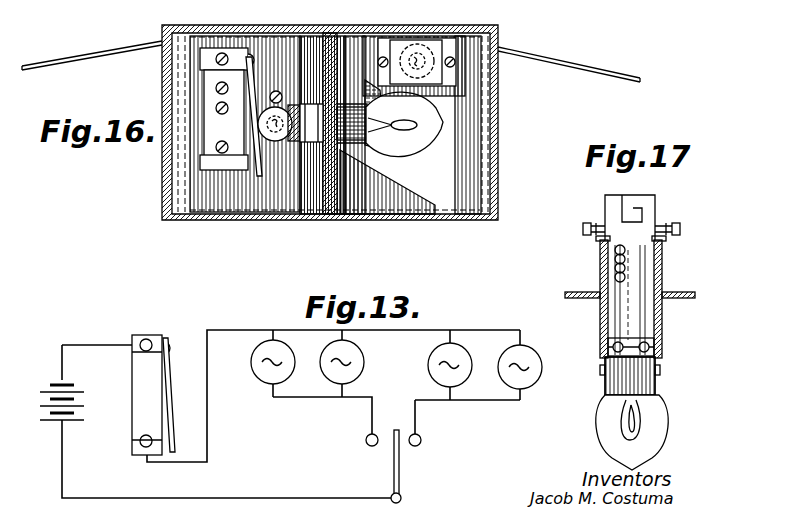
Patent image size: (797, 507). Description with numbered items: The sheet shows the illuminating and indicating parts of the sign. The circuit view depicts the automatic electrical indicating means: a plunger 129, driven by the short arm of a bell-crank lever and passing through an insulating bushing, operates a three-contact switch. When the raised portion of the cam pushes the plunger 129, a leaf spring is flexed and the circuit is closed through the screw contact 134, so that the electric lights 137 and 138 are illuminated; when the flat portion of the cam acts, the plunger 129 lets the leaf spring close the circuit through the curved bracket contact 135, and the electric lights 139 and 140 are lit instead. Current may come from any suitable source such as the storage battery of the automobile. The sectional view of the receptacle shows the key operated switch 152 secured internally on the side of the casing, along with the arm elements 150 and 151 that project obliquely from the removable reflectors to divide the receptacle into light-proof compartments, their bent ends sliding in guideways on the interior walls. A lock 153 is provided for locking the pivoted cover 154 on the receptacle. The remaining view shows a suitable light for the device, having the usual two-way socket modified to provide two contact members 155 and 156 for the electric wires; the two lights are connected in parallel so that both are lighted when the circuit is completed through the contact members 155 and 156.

In FIG. 13, the plunger 129 is at (400, 476).
In FIG. 13, the screw contact 134 is at (365, 440).
In FIG. 13, the curved bracket contact 135 is at (422, 440).
In FIG. 13, the electric light 137 is at (258, 375).
In FIG. 13, the electric light 138 is at (358, 362).
In FIG. 13, the electric light 139 is at (452, 353).
In FIG. 16, the electric light 140 is at (408, 145).
In FIG. 13, the electric light 140 is at (532, 375).
In FIG. 16, the arm element 150 is at (457, 192).
In FIG. 16, the arm element 151 is at (302, 198).
In FIG. 16, the key operated switch 152 is at (243, 100).
In FIG. 13, the key operated switch 152 is at (144, 382).
In FIG. 16, the lock 153 is at (425, 60).
In FIG. 16, the pivoted cover 154 is at (326, 33).
In FIG. 17, the contact member 155 is at (590, 229).
In FIG. 17, the contact member 156 is at (680, 228).